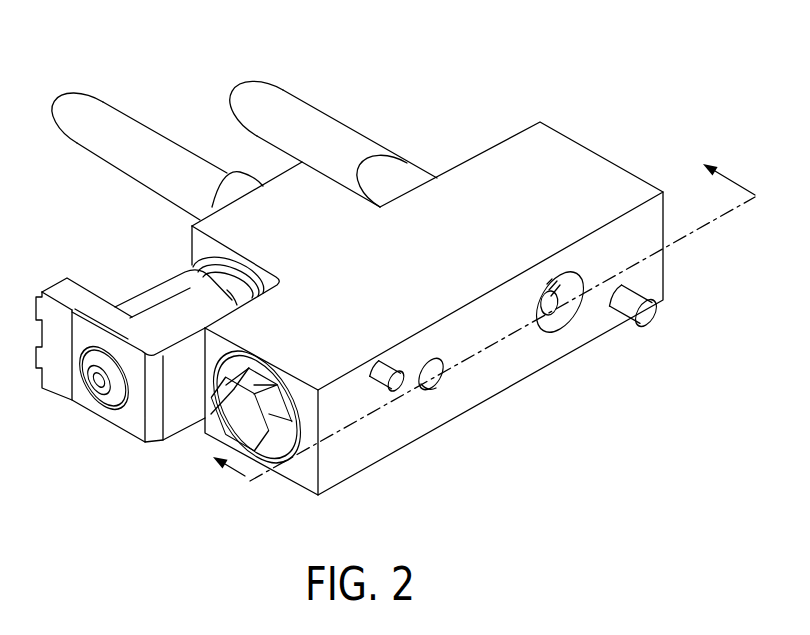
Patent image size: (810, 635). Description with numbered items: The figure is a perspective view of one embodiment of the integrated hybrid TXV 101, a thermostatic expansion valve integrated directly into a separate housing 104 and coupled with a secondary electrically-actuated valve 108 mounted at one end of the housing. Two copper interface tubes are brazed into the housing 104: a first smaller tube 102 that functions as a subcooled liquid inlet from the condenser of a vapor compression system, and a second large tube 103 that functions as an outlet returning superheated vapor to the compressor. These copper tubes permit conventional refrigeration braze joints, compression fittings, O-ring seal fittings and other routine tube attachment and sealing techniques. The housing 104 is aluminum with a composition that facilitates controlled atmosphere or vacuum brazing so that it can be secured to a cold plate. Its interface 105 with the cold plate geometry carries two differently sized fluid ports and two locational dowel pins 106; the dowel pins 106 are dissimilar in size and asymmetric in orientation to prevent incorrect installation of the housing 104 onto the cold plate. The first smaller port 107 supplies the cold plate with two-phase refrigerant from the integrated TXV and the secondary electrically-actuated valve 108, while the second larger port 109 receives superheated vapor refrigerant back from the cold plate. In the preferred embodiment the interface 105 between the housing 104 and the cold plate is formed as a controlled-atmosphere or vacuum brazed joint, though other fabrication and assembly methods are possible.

The integrated hybrid TXV 101 is at (700, 95).
The first smaller tube 102 is at (137, 147).
The second large tube 103 is at (300, 113).
The housing 104 is at (585, 163).
The interface 105 is at (652, 267).
The locational dowel pins 106 is at (399, 401).
The first smaller port 107 is at (429, 391).
The secondary electrically-actuated valve 108 is at (110, 402).
The second larger port 109 is at (562, 316).